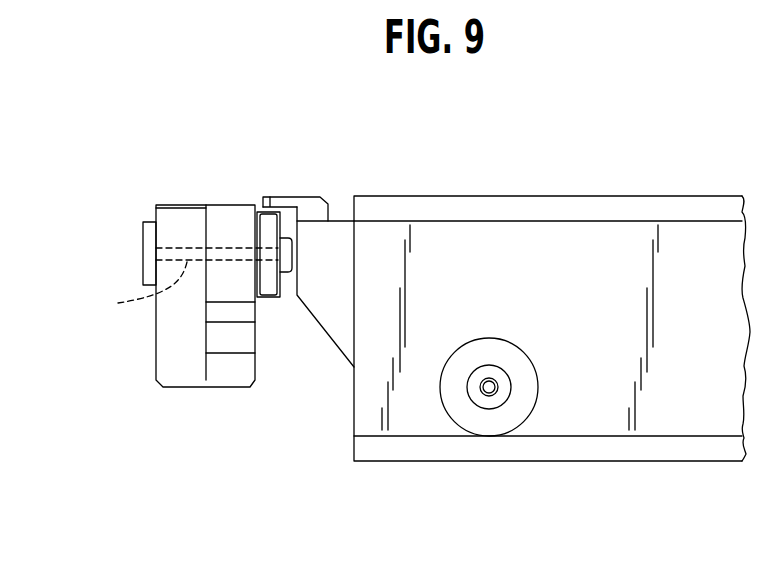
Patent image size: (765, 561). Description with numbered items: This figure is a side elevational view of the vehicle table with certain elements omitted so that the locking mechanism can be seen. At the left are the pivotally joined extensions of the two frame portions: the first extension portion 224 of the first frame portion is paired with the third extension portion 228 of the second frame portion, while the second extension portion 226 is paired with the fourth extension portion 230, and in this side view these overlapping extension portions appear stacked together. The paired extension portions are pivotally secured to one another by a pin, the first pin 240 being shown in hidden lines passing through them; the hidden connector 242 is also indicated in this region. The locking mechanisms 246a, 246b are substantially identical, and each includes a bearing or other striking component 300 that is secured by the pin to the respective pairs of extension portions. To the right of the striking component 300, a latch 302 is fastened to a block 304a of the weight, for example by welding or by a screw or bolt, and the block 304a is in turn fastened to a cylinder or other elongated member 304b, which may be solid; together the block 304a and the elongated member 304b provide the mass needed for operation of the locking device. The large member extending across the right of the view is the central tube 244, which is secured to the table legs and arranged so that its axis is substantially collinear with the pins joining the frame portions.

The first extension portion 224 is at (211, 261).
The fourth extension portion 230 is at (228, 217).
The second extension portion 226 is at (146, 296).
The third extension portion 228 is at (173, 357).
The first pin 240 is at (170, 291).
The connector cable 242 is at (170, 291).
The locking mechanism 246a is at (284, 146).
The locking mechanism 246b is at (246, 185).
The striking component 300 is at (270, 287).
The latch 302 is at (303, 203).
The block 304a is at (335, 317).
The elongated member 304b is at (473, 415).
The central tube 244 is at (652, 450).